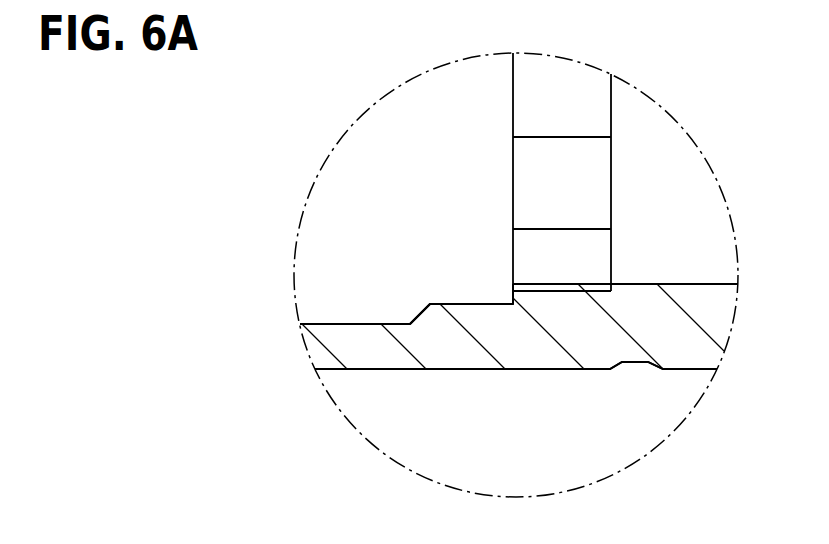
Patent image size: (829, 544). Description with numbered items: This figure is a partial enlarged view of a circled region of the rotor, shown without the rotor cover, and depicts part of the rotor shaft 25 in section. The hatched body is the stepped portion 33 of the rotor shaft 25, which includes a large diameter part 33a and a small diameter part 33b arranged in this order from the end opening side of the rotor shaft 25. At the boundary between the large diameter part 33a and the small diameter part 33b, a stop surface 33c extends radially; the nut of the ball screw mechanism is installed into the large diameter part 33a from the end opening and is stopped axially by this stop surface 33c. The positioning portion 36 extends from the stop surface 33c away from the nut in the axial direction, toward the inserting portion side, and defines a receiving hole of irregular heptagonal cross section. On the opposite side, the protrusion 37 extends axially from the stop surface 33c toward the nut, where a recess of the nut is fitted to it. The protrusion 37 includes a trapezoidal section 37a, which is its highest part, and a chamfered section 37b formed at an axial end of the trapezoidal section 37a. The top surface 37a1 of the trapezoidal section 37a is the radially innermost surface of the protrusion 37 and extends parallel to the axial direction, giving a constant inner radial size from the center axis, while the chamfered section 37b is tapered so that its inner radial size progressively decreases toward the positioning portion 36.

The rotor shaft 25 is at (548, 370).
The stepped portion 33 is at (443, 360).
The large diameter part 33a is at (341, 323).
The small diameter part 33b is at (673, 283).
The stop surface 33c is at (512, 300).
The positioning portion 36 is at (530, 178).
The protrusion 37 is at (426, 290).
The trapezoidal section 37a is at (465, 303).
The top surface 37a1 is at (482, 303).
The chamfered section 37b is at (418, 308).